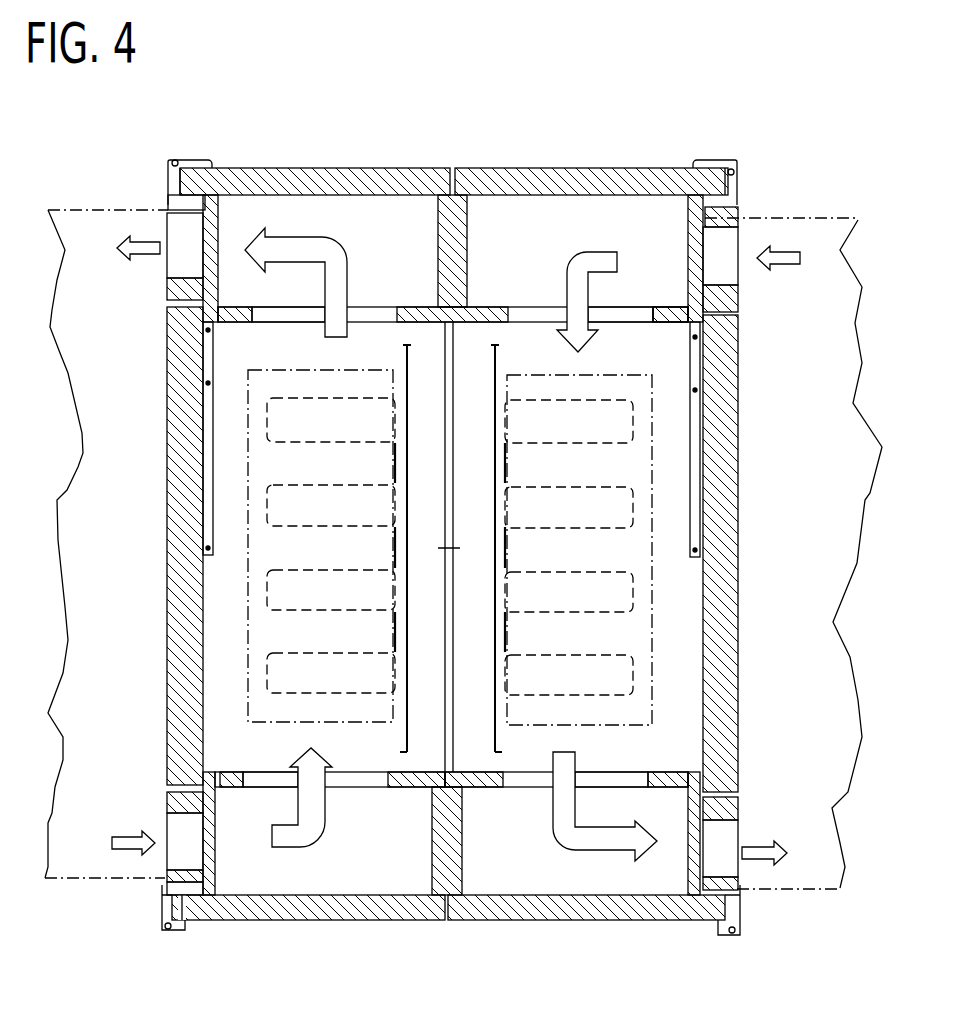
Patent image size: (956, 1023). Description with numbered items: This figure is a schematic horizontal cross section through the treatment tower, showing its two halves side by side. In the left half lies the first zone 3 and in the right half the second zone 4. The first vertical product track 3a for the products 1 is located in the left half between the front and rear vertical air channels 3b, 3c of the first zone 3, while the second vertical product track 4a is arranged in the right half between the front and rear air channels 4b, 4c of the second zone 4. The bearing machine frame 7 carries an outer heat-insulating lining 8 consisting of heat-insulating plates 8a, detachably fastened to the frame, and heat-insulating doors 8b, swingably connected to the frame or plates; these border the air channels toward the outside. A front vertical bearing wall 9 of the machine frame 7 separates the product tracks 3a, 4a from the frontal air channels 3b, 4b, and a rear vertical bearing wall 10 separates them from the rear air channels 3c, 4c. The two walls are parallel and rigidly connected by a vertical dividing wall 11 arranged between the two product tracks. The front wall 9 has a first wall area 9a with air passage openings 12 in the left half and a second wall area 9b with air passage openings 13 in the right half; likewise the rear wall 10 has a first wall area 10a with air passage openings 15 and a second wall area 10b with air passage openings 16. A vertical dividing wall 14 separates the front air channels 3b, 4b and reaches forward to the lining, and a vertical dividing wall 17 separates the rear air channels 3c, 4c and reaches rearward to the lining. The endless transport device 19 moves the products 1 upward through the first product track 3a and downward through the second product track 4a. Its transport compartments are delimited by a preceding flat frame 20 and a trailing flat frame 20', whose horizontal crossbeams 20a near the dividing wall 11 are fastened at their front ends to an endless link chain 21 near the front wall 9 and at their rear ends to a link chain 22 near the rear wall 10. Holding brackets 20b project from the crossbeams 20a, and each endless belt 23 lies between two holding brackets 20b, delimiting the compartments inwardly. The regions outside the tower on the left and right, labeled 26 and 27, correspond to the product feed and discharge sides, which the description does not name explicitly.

The products 1 is at (250, 418).
The first zone 3 is at (170, 545).
The first vertical product track 3a is at (208, 645).
The front vertical air channel of the first zone 3b is at (262, 882).
The rear vertical air channel of the first zone 3c is at (345, 212).
The second zone 4 is at (736, 545).
The second vertical product track 4a is at (685, 675).
The front air channel of the second zone 4b is at (635, 875).
The rear air channel of the second zone 4c is at (535, 212).
The bearing machine frame 7 is at (533, 308).
The outer heat insulating lining 8 is at (462, 561).
The heat-insulating plates 8a is at (168, 192).
The heat-insulating doors 8b is at (450, 551).
The front vertical bearing wall 9 is at (347, 790).
The first wall area of the front wall 9a is at (258, 770).
The second wall area of the front wall 9b is at (628, 772).
The rear vertical bearing wall 10 is at (357, 305).
The first wall area of the rear wall 10a is at (290, 312).
The second wall area of the rear wall 10b is at (675, 312).
The vertical dividing wall 11 is at (445, 440).
The air passage openings 12 is at (330, 776).
The air passage openings 13 is at (566, 784).
The vertical dividing wall 14 is at (435, 800).
The air passage openings 15 is at (453, 297).
The air passage openings 16 is at (600, 318).
The vertical dividing wall 17 is at (455, 232).
The transport device 19 is at (495, 742).
The flat frame 20 is at (250, 505).
The flat frame 20' is at (659, 508).
The horizontal crossbeams 20a is at (405, 585).
The holding brackets 20b is at (270, 428).
The endless link chain 21 is at (495, 750).
The link chain 22 is at (407, 345).
The endless belt 23 is at (393, 465).
The outer space on left side 26 is at (80, 210).
The outer space on right side 27 is at (815, 222).